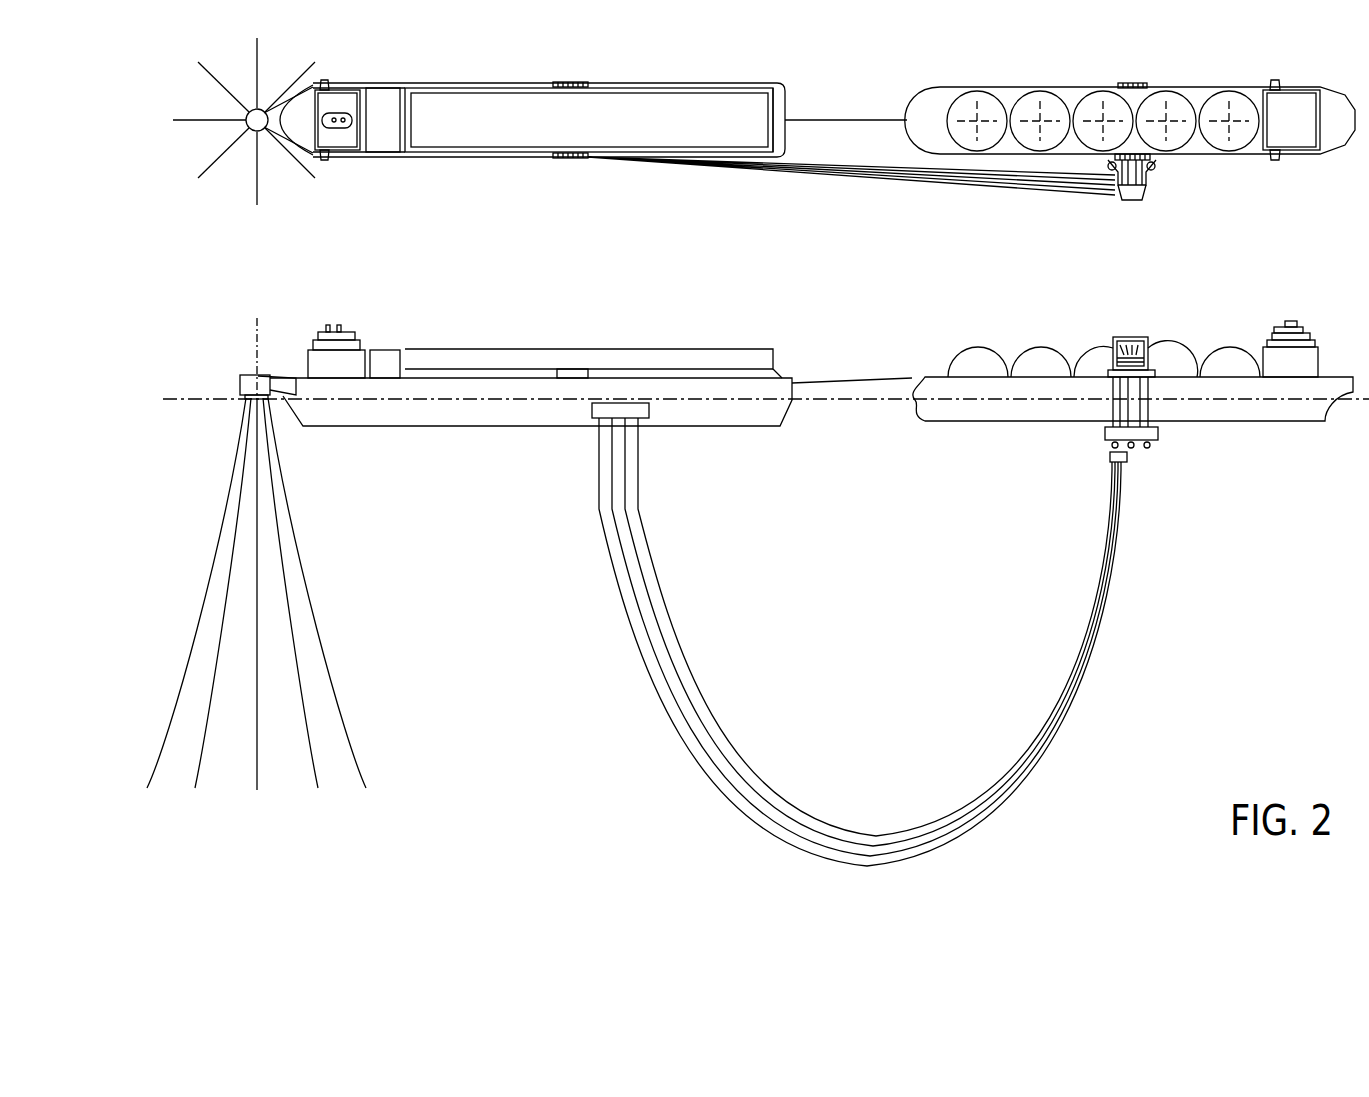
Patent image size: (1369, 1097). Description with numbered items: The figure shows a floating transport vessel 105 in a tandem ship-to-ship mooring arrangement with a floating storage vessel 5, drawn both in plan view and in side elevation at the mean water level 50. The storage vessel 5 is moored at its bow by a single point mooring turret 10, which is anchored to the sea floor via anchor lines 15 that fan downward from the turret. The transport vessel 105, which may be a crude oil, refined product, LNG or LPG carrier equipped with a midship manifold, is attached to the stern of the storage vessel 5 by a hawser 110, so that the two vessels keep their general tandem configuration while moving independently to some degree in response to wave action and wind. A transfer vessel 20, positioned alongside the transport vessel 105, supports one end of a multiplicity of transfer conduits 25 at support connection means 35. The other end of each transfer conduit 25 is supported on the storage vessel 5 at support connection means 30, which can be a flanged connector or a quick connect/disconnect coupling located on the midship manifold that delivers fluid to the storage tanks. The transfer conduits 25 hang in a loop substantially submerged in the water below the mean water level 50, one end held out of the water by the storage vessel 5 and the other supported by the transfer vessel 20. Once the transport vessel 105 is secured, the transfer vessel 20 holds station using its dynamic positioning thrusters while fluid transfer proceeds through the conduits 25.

The floating storage vessel 5 is at (553, 347).
The single point mooring turret 10 is at (250, 133).
The anchor lines 15 is at (323, 613).
The transfer vessel 20 is at (1127, 214).
The transfer conduits 25 is at (1010, 192).
The support connection means 30 is at (647, 421).
The support connection means 35 is at (1106, 463).
The mean water level 50 is at (180, 397).
The floating transport vessel 105 is at (1241, 160).
The hawser 110 is at (837, 127).